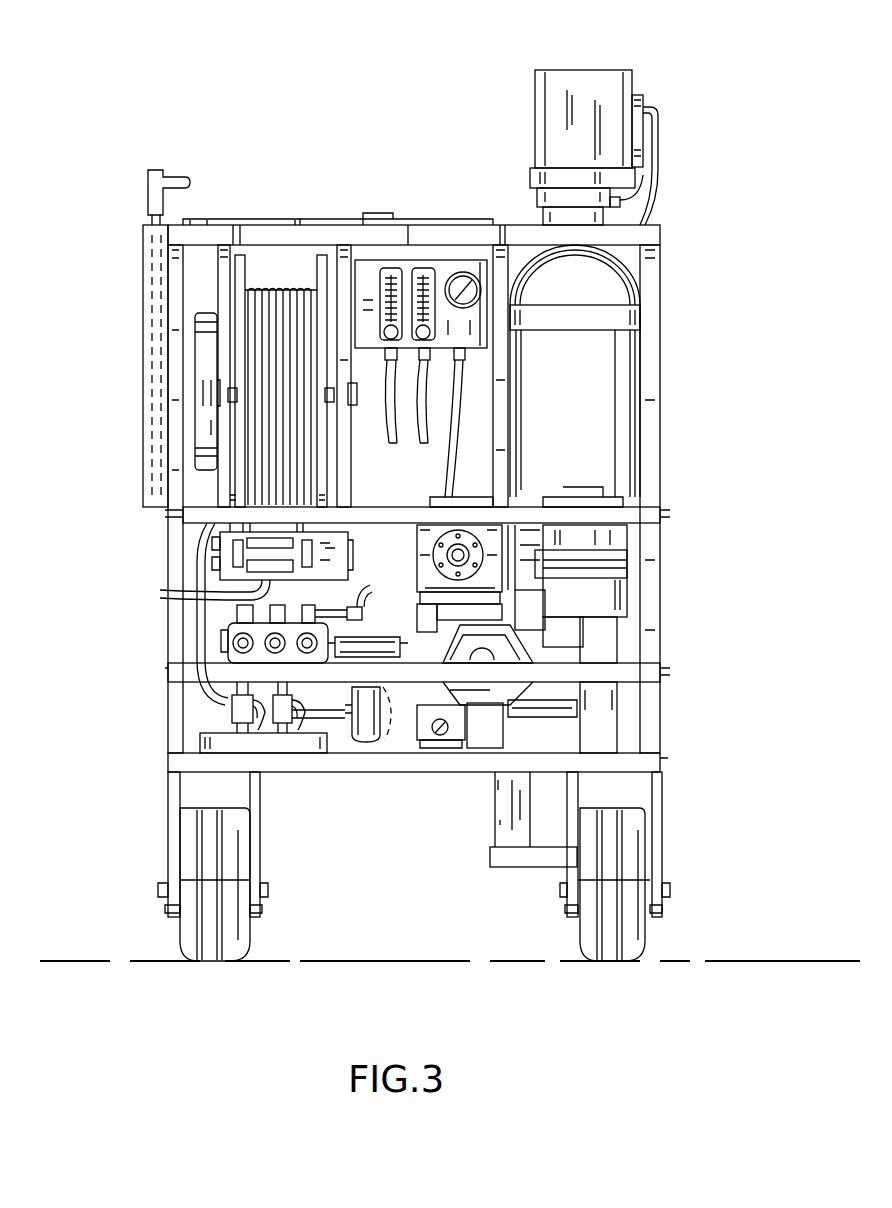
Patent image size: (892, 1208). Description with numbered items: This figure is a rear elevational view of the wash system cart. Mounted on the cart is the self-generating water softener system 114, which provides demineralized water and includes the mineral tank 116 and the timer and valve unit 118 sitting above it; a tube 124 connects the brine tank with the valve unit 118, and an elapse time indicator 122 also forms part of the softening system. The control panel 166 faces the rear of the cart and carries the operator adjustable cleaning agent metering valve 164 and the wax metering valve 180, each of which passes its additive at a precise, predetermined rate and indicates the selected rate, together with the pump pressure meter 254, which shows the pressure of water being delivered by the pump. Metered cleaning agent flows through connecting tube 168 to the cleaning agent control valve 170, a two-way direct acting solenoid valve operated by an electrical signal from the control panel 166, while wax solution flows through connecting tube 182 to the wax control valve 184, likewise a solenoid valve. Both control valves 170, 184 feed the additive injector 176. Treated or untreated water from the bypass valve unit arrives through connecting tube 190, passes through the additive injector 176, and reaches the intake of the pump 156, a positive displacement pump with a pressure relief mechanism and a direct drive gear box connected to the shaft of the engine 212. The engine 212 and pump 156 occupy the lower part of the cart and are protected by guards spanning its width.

The water softener system 114 is at (605, 148).
The mineral tank 116 is at (612, 400).
The timer and valve unit 118 is at (615, 70).
The elapse time indicator 122 is at (385, 213).
The tube 124 is at (655, 133).
The pump 156 is at (215, 727).
The cleaning agent metering valve 164 is at (425, 268).
The control panel 166 is at (357, 212).
The connecting tube 168 is at (430, 398).
The cleaning agent control valve 170 is at (258, 745).
The additive injector 176 is at (360, 735).
The wax metering valve 180 is at (380, 270).
The connecting tube 182 is at (390, 440).
The wax control valve 184 is at (300, 735).
The connecting tube 190 is at (385, 745).
The engine 212 is at (585, 710).
The pump pressure meter 254 is at (455, 273).